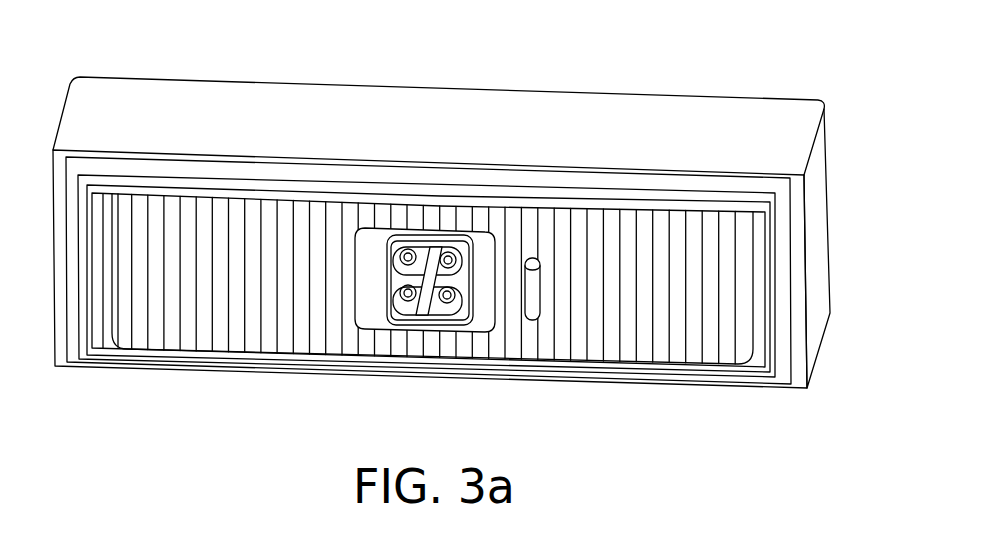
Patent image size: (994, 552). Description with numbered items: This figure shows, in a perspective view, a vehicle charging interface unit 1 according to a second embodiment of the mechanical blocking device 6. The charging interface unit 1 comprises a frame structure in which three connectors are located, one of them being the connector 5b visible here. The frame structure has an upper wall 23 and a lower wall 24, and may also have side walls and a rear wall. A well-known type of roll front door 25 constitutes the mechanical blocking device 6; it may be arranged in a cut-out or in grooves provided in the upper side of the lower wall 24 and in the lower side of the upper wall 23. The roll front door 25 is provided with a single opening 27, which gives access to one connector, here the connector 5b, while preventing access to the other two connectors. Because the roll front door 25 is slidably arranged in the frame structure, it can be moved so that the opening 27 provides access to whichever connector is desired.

The charging interface unit 1 is at (441, 230).
The upper wall 23 is at (479, 125).
The lower wall 24 is at (248, 378).
The roll front door 25 is at (128, 282).
The mechanical blocking device 6 is at (665, 313).
The opening 27 is at (404, 332).
The connector 5b is at (422, 298).